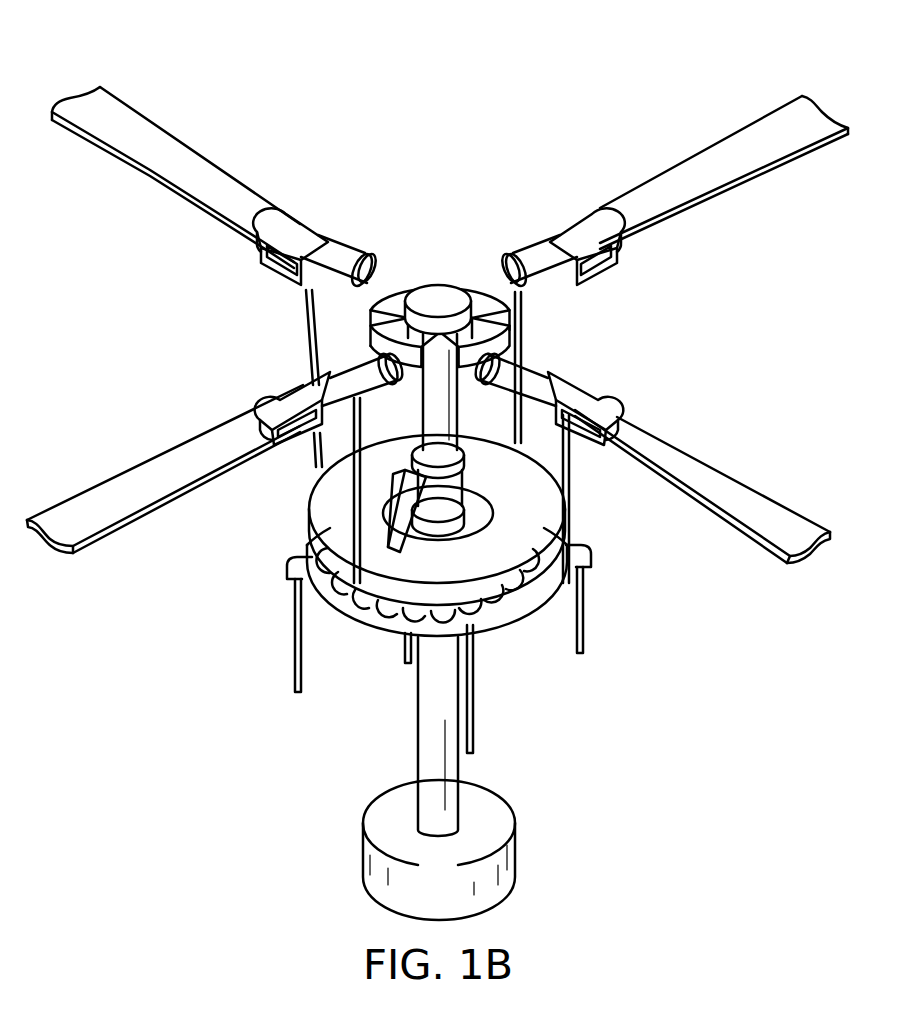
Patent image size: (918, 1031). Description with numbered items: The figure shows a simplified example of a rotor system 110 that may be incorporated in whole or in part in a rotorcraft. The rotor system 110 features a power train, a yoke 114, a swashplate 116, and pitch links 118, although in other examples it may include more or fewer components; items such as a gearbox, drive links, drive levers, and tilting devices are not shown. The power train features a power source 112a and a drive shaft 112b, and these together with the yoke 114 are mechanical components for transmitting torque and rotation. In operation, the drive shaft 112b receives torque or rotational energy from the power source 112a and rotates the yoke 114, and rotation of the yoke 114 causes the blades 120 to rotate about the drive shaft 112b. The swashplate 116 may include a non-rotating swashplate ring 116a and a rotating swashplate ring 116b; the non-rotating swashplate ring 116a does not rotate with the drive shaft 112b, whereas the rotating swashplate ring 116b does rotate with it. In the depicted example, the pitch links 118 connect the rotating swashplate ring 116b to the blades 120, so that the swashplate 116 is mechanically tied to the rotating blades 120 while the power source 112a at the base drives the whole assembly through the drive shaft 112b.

The rotor system 110 is at (496, 87).
The power source 112a is at (517, 855).
The drive shaft 112b is at (418, 743).
The yoke 114 is at (395, 293).
The swashplate 116 is at (613, 500).
The non-rotating swashplate ring 116a is at (510, 627).
The rotating swashplate ring 116b is at (322, 497).
The pitch links 118 is at (305, 338).
The blades 120 is at (192, 162).